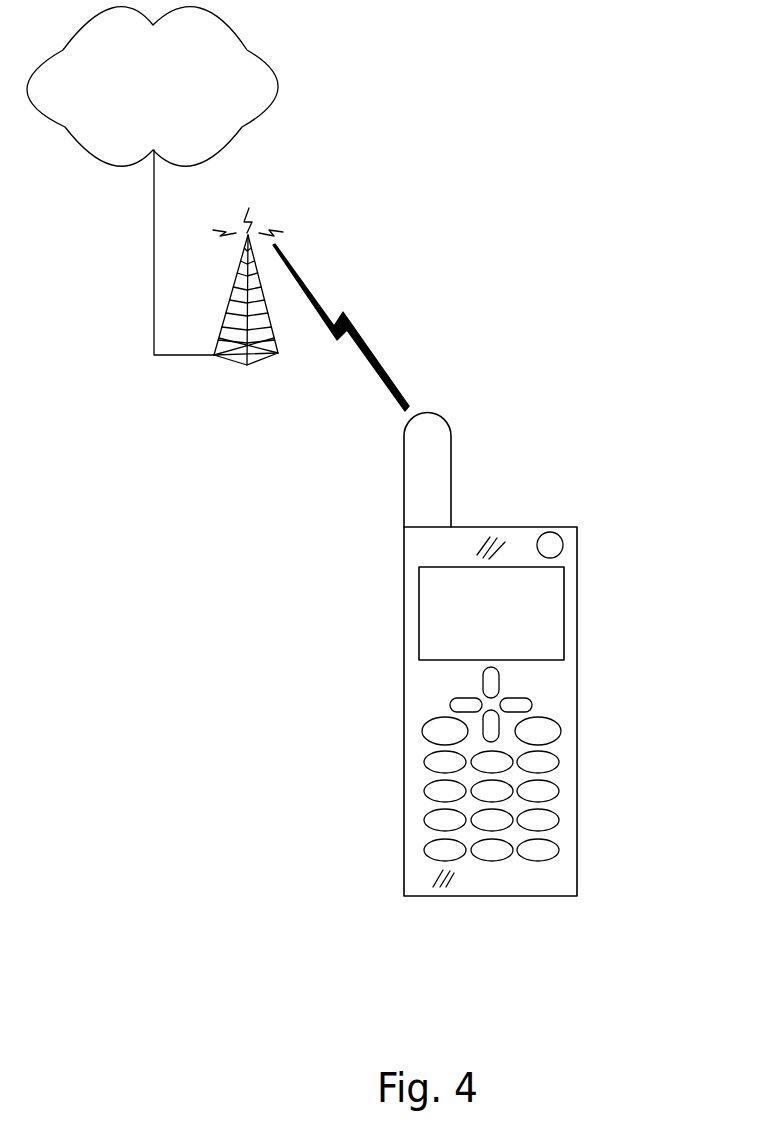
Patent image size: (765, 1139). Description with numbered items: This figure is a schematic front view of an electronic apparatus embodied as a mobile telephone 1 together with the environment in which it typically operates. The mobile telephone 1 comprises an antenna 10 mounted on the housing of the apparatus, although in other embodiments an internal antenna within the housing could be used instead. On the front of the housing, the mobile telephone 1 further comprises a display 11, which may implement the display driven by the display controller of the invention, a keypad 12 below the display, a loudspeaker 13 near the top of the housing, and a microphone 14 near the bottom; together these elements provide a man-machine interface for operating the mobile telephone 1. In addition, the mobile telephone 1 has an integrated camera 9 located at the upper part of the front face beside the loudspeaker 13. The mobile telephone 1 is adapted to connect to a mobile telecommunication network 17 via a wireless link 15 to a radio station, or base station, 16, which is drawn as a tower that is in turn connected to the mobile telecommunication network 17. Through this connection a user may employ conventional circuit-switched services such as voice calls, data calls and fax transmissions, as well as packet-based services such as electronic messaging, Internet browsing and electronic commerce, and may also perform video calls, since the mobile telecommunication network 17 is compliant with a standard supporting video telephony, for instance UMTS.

The mobile telephone 1 is at (471, 654).
The integrated camera 9 is at (548, 545).
The antenna 10 is at (404, 468).
The display 11 is at (552, 607).
The keypad 12 is at (553, 726).
The loudspeaker 13 is at (503, 530).
The microphone 14 is at (438, 876).
The wireless link 15 is at (317, 303).
The radio station (base station) 16 is at (240, 365).
The mobile telecommunication network 17 is at (278, 78).